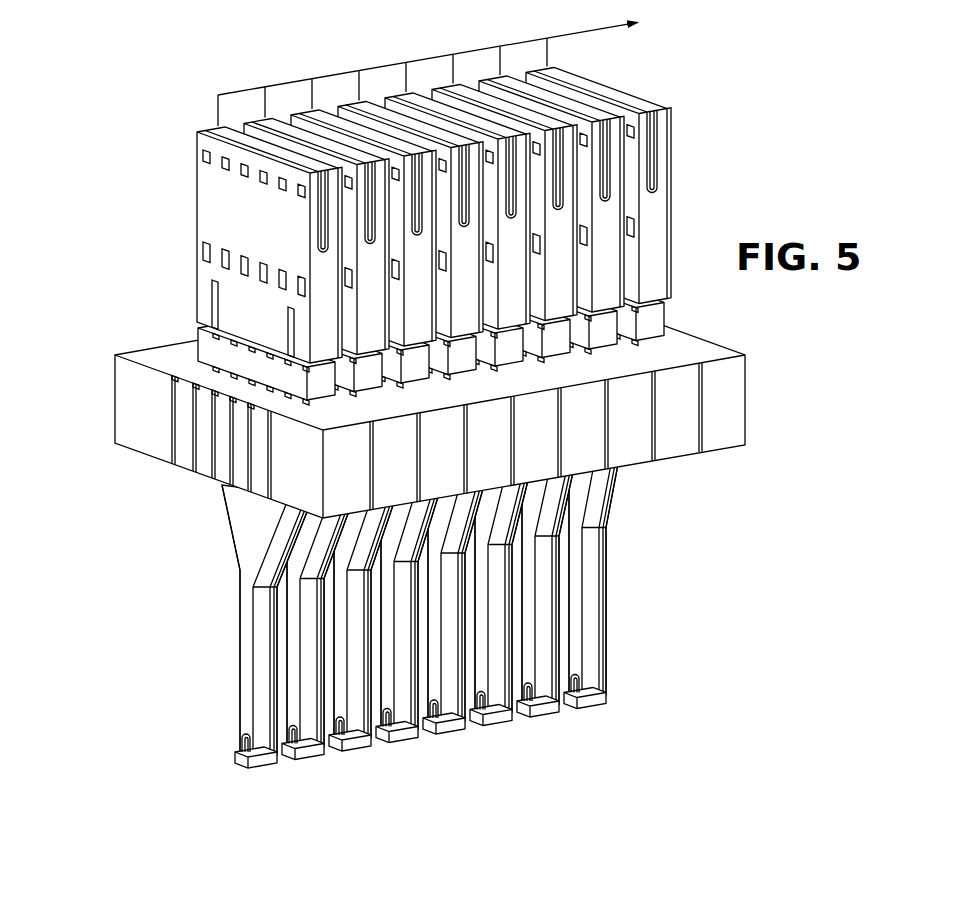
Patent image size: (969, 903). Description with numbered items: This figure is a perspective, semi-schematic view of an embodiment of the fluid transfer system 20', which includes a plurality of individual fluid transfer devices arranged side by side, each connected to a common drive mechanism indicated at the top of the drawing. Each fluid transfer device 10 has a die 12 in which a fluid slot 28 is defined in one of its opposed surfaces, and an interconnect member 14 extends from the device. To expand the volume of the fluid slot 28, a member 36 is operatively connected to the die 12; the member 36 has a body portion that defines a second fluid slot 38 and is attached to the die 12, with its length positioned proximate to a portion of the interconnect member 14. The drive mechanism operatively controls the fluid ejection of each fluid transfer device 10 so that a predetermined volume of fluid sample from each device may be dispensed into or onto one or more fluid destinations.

The fluid transfer system 20' is at (431, 434).
The fluid transfer device 10 is at (420, 650).
The die 12 is at (378, 763).
The interconnect member 14 is at (420, 597).
The fluid slot 28 is at (543, 716).
The member 36 is at (236, 659).
The fluid slot 38 is at (578, 670).